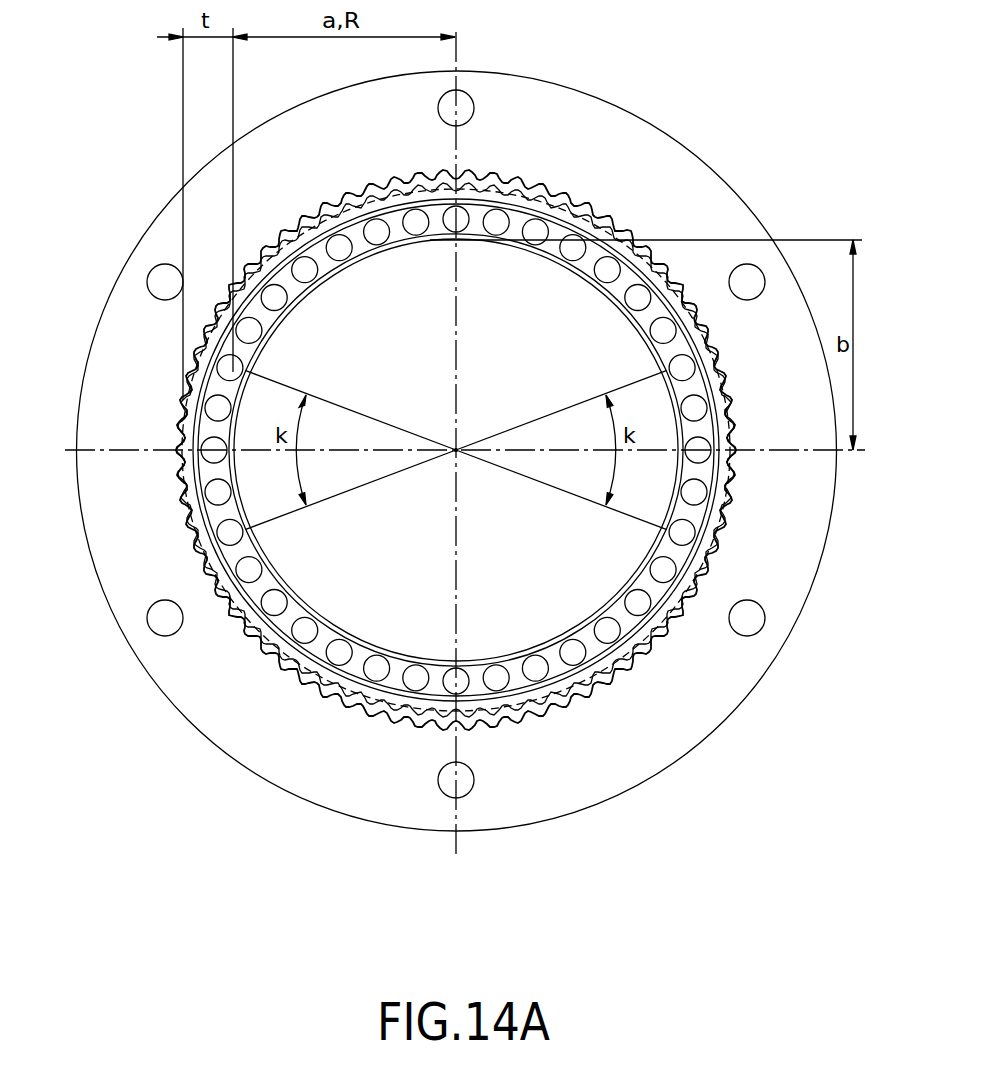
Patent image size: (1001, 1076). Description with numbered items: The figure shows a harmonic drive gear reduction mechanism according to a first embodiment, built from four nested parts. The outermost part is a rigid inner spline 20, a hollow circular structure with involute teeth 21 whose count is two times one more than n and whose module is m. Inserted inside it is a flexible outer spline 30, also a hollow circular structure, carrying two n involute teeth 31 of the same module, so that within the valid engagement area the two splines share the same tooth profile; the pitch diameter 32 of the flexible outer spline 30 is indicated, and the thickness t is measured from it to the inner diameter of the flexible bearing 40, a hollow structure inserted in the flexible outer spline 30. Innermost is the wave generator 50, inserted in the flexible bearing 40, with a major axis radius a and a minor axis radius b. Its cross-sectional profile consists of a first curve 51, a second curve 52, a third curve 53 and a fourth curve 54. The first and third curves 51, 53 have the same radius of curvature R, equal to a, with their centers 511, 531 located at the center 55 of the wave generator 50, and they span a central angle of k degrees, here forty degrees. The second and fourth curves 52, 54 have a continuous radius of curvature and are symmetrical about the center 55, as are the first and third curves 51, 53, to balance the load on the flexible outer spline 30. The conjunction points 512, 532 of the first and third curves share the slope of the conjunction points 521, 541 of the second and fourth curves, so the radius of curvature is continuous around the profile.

The rigid inner spline 20 is at (625, 110).
The teeth of the rigid inner spline 21 is at (727, 473).
The flexible outer spline 30 is at (459, 477).
The teeth of the flexible outer spline 31 is at (727, 512).
The pitch diameter 32 is at (190, 532).
The flexible bearing 40 is at (590, 645).
The wave generator 50 is at (456, 559).
The first curve 51 is at (250, 492).
The second curve 52 is at (431, 236).
The third curve 53 is at (668, 492).
The fourth curve 54 is at (430, 662).
The center of the wave generator 55 is at (456, 450).
The center of the first curve 511 is at (456, 450).
The conjunction point of the first curve 512 is at (246, 372).
The conjunction point of the second curve 521 is at (666, 372).
The center of the third curve 531 is at (456, 450).
The conjunction point of the third curve 532 is at (666, 528).
The conjunction point of the fourth curve 541 is at (246, 528).